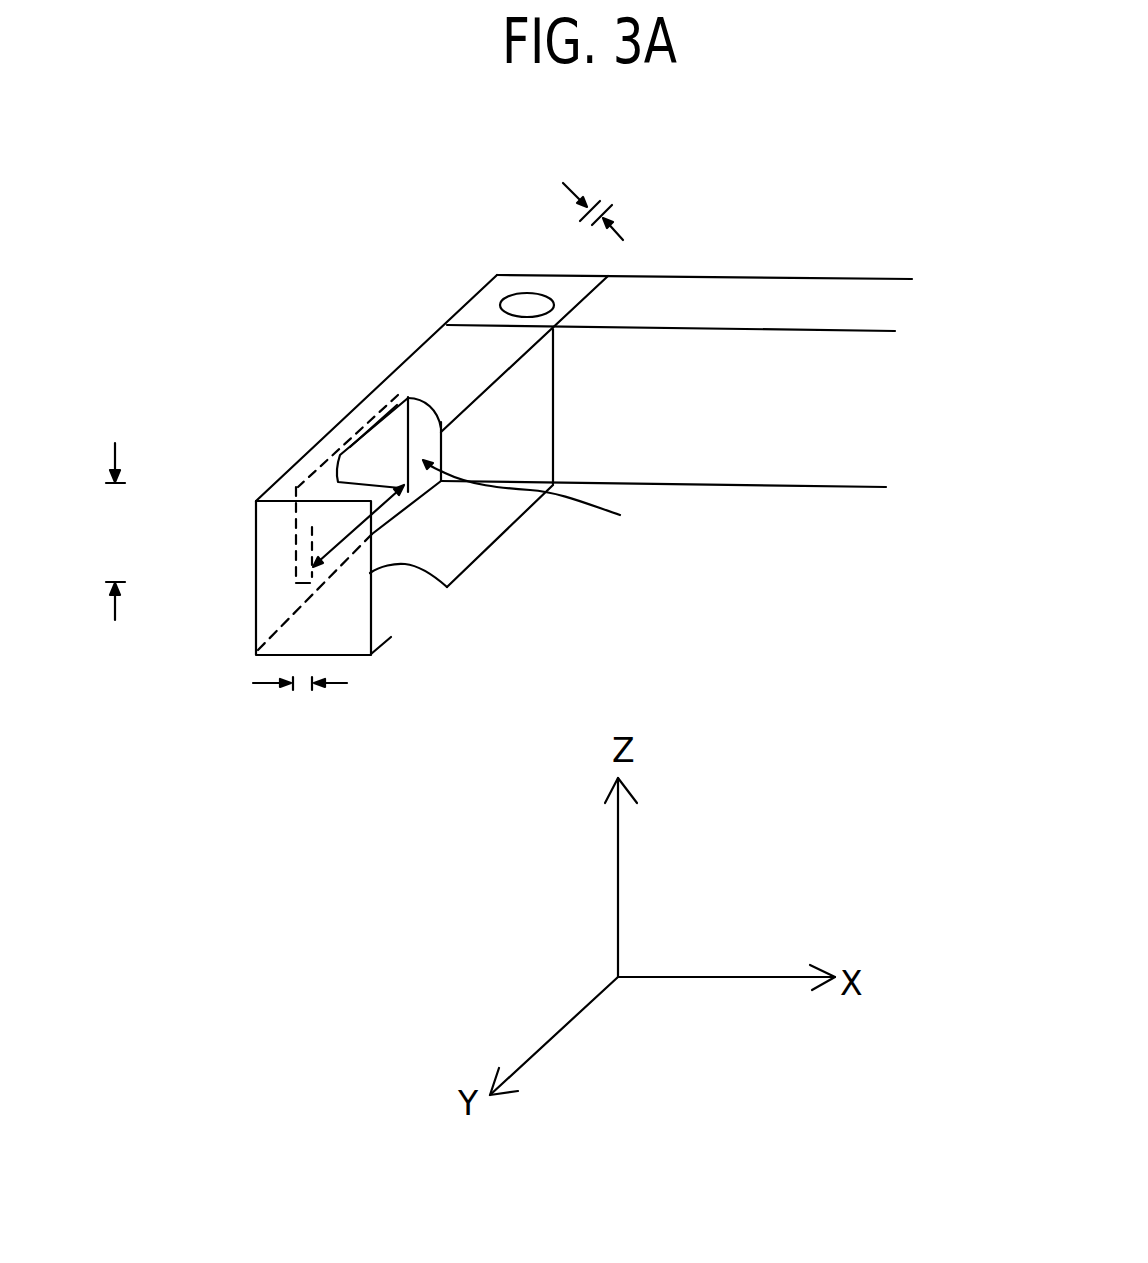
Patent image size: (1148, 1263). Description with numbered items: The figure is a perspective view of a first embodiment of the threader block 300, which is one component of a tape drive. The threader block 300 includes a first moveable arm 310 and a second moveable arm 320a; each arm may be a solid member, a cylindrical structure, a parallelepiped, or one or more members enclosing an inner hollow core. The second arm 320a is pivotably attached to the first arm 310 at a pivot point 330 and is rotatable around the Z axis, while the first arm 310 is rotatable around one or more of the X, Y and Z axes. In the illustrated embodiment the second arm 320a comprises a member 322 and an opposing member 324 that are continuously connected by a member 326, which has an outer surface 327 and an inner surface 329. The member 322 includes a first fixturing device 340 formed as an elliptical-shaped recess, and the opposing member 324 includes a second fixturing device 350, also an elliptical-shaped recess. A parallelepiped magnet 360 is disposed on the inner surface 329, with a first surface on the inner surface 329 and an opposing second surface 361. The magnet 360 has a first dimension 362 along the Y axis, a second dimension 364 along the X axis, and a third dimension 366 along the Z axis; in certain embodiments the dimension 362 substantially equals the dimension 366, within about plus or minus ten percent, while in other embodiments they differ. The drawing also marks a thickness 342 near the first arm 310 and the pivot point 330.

The threader block 300 is at (292, 838).
The first moveable arm 310 is at (643, 288).
The second moveable arm 320a is at (398, 330).
The member 322 is at (421, 349).
The opposing member 324 is at (483, 538).
The member 326 is at (242, 535).
The outer surface 327 is at (253, 577).
The inner surface 329 is at (257, 628).
The pivot point 330 is at (523, 303).
The first fixturing device 340 is at (357, 433).
The thickness 342 is at (600, 204).
The second fixturing device 350 is at (420, 572).
The magnet 360 is at (548, 499).
The second surface 361 is at (441, 430).
The first dimension 362 is at (400, 508).
The second dimension 364 is at (298, 692).
The third dimension 366 is at (115, 531).